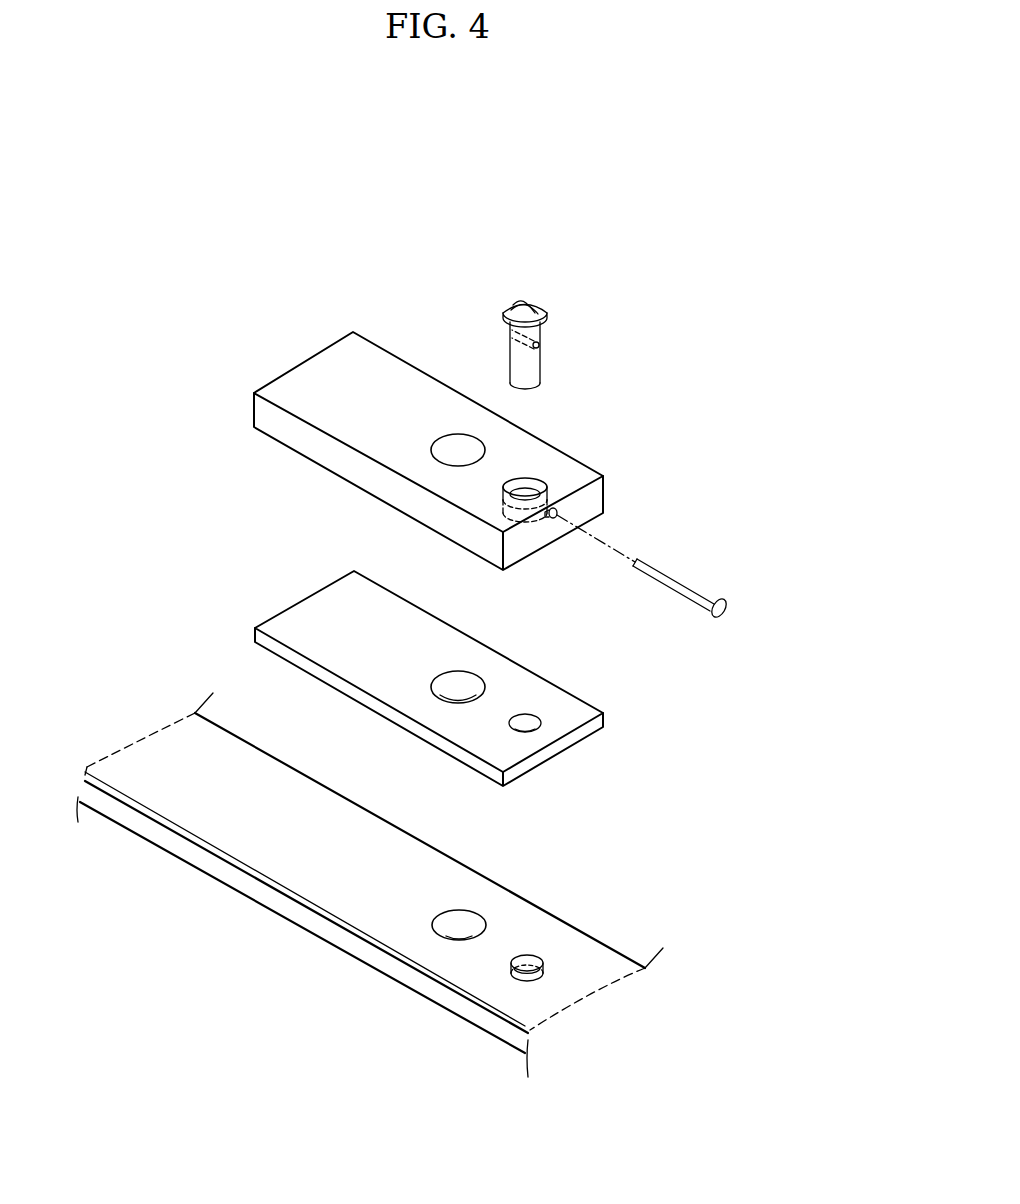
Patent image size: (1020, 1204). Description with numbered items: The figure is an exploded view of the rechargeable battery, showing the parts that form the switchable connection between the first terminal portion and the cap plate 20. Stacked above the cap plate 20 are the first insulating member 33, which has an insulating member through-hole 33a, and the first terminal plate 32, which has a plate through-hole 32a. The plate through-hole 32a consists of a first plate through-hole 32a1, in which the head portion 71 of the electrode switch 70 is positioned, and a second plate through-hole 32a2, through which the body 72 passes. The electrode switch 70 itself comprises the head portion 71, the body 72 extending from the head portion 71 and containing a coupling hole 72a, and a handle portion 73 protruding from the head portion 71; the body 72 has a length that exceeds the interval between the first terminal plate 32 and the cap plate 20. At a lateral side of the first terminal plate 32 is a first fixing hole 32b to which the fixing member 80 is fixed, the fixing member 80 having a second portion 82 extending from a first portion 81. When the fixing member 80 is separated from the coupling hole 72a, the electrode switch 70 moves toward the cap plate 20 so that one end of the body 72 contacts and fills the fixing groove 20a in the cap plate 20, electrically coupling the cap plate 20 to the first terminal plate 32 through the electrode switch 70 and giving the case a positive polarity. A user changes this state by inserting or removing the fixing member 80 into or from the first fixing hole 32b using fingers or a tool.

The cap plate 20 is at (163, 755).
The fixing groove 20a is at (527, 965).
The first terminal plate 32 is at (322, 372).
The plate through-hole 32a is at (651, 476).
The first plate through-hole 32a1 is at (528, 485).
The second plate through-hole 32a2 is at (536, 528).
The first fixing hole 32b is at (556, 514).
The first insulating member 33 is at (311, 616).
The insulating member through-hole 33a is at (528, 723).
The electrode switch 70 is at (555, 310).
The head portion 71 is at (552, 278).
The body 72 is at (568, 363).
The coupling hole 72a is at (539, 349).
The handle portion 73 is at (520, 310).
The fixing member 80 is at (712, 578).
The first portion 81 is at (726, 613).
The second portion 82 is at (657, 571).